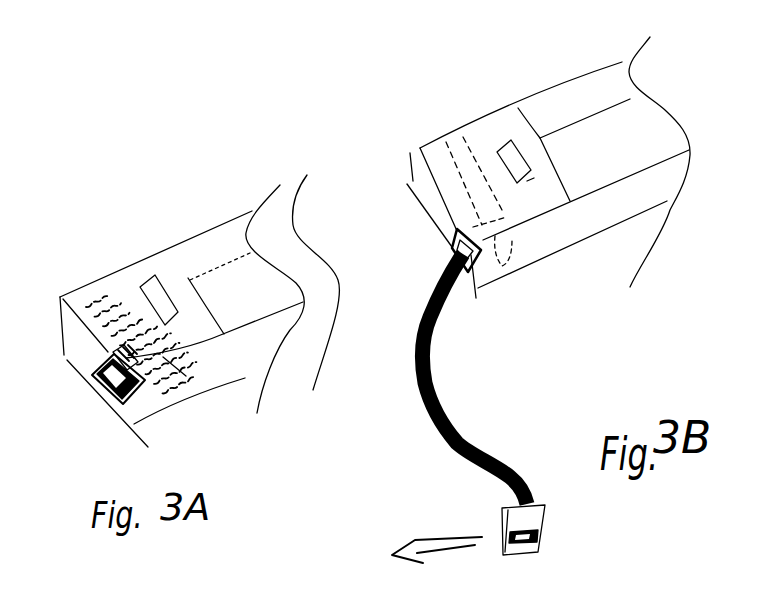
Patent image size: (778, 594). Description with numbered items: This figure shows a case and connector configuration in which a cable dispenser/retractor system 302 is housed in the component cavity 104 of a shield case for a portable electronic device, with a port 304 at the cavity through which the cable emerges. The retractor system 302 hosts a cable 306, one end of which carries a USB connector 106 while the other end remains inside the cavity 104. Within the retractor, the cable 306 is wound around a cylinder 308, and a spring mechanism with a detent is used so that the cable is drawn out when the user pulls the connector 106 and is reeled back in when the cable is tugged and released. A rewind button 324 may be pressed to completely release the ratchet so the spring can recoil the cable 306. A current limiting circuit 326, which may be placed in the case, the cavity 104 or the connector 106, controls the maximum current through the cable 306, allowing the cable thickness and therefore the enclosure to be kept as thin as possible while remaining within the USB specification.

In FIG. 3A, the component cavity 104 is at (205, 368).
In FIG. 3B, the USB connector 106 is at (554, 533).
In FIG. 3A, the cable dispenser/retractor system 302 is at (117, 296).
In FIG. 3A, the connector port 304 is at (90, 392).
In FIG. 3B, the cable 306 is at (481, 433).
In FIG. 3B, the cylinder 308 is at (462, 153).
In FIG. 3A, the rewind button 324 is at (158, 278).
In FIG. 3A, the current limiting circuit 326 is at (190, 378).